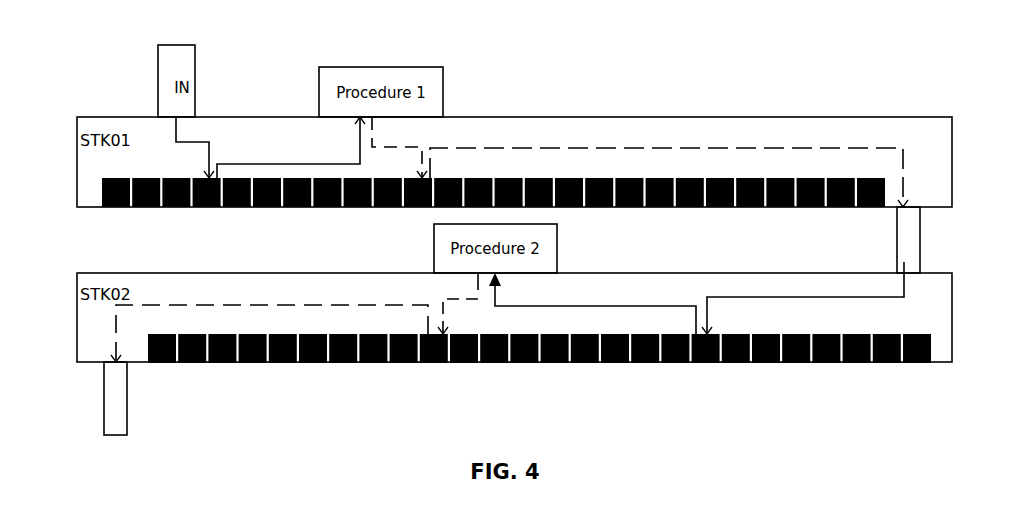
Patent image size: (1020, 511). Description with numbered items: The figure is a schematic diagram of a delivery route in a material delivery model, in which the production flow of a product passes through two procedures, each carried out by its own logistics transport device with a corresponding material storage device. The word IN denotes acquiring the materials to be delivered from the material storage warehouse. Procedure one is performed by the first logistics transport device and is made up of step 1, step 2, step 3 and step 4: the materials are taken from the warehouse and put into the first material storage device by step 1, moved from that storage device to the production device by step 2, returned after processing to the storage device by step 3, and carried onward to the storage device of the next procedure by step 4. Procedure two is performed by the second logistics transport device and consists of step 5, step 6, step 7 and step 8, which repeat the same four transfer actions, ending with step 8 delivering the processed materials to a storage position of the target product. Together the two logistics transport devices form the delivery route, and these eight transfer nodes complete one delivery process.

The step ① 1 is at (202, 147).
The step ② 2 is at (291, 147).
The step ③ 3 is at (399, 147).
The step ④ 4 is at (669, 168).
The step ⑤ 5 is at (803, 298).
The step ⑥ 6 is at (592, 303).
The step ⑦ 7 is at (458, 303).
The step ⑧ 8 is at (269, 326).